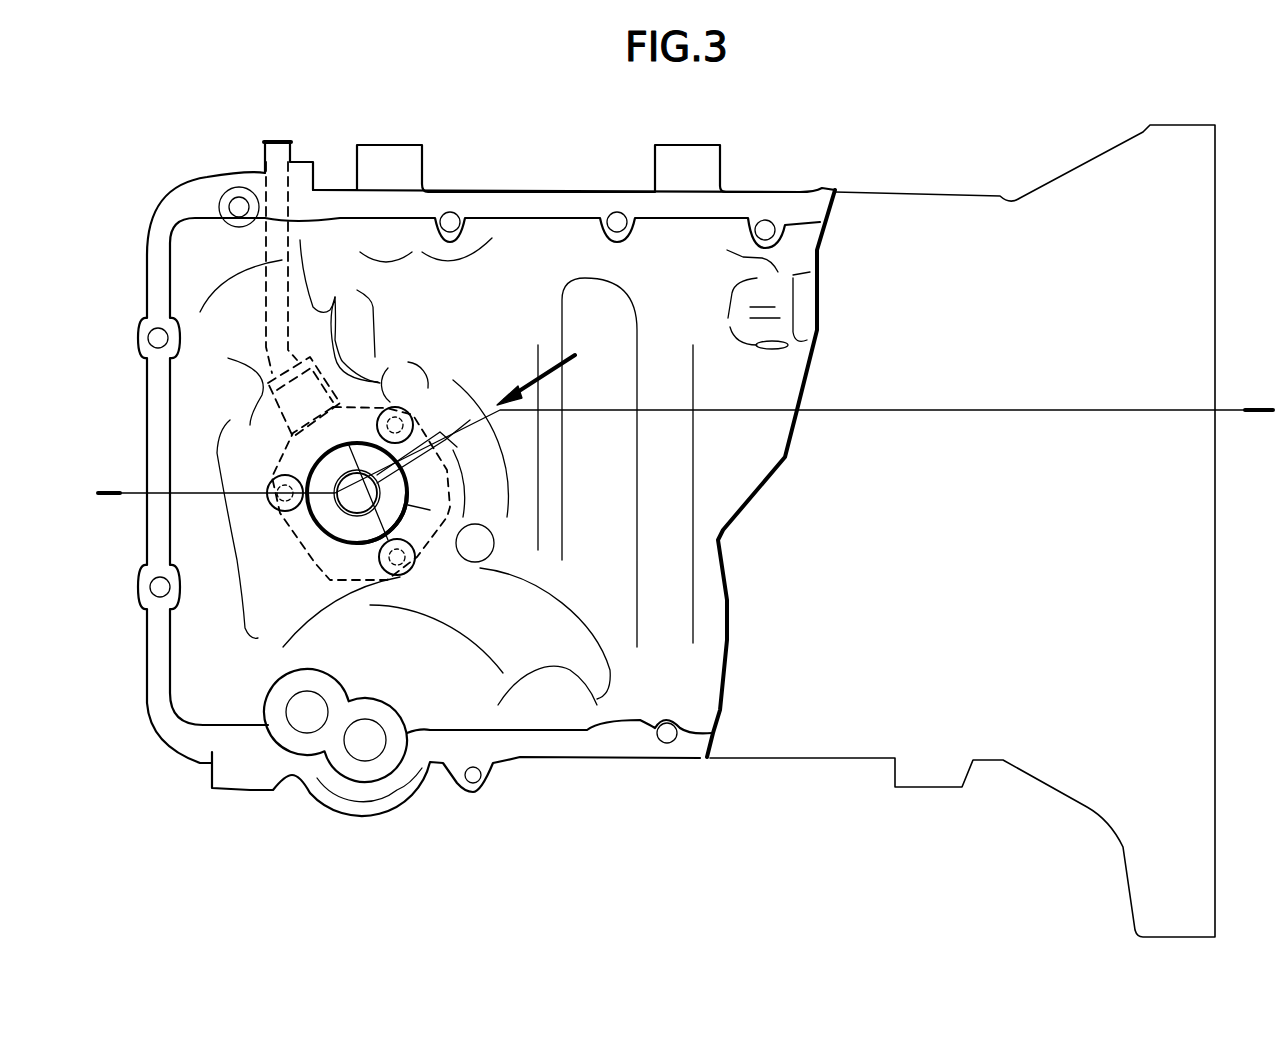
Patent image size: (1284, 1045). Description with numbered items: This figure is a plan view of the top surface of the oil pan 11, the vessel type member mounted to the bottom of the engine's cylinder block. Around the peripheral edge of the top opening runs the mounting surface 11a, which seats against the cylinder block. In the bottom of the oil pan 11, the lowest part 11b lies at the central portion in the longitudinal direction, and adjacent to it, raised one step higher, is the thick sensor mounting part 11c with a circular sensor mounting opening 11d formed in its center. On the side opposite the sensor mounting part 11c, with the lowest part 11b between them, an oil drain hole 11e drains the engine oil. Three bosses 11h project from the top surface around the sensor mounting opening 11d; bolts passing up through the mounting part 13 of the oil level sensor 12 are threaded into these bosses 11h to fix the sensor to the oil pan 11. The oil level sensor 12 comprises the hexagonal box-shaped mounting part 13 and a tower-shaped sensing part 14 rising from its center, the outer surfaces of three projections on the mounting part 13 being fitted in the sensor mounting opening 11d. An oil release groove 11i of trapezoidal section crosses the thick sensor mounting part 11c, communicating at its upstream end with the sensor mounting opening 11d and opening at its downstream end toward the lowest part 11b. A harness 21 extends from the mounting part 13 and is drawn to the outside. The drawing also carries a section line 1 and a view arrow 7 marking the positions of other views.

The section line 1- 1 is at (105, 495).
The viewing direction arrow 7 is at (552, 372).
The oil pan 11 is at (540, 188).
The mounting surface 11a is at (508, 205).
The lowest part 11b is at (615, 511).
The sensor mounting part 11c is at (327, 588).
The sensor mounting opening 11d is at (333, 457).
The oil drain hole 11e is at (778, 350).
The bosses 11h is at (400, 405).
The oil release groove 11i is at (430, 440).
The oil level sensor 12 is at (362, 543).
The mounting part 13 is at (350, 450).
The sensing part 14 is at (430, 510).
The harness 21 is at (263, 253).